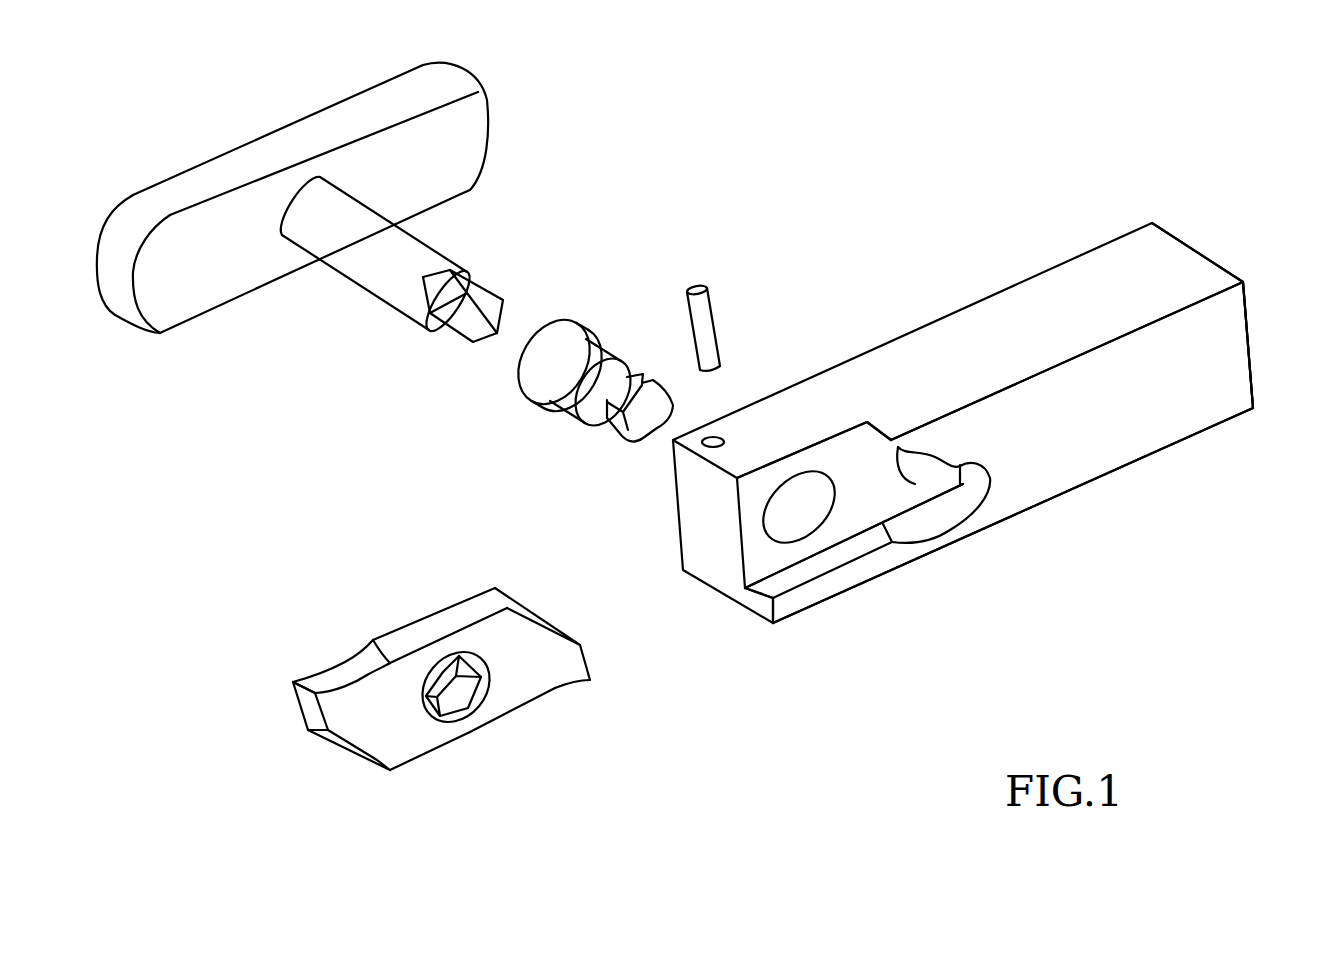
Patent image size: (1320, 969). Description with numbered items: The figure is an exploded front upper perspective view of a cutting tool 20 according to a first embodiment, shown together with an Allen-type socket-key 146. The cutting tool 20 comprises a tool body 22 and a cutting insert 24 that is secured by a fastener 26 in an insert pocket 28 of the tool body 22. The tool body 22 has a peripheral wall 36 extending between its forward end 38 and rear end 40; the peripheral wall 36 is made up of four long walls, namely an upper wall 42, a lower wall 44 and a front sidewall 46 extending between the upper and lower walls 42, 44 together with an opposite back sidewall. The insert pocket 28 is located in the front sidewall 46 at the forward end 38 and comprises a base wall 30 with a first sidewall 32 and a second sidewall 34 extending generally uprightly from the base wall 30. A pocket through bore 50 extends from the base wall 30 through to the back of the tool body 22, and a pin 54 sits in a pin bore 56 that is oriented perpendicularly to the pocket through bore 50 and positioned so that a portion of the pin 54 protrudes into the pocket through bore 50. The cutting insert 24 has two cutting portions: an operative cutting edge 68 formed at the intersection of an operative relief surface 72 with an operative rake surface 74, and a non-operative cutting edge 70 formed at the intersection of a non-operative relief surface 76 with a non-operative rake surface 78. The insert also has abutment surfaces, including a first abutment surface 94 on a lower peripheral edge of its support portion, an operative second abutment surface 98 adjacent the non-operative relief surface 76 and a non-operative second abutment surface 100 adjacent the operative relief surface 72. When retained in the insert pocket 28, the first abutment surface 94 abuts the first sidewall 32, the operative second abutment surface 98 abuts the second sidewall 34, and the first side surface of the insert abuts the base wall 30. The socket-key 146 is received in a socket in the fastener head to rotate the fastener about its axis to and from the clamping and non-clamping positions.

The cutting tool 20 is at (832, 180).
The tool body 22 is at (879, 328).
The cutting insert 24 is at (508, 758).
The fastener 26 is at (596, 305).
The insert pocket 28 is at (783, 558).
The base wall 30 is at (887, 497).
The first sidewall 32 is at (803, 568).
The second sidewall 34 is at (915, 484).
The peripheral wall 36 is at (1025, 318).
The forward end 38 is at (690, 483).
The rear end 40 is at (1252, 343).
The upper wall 42 is at (1165, 260).
The lower wall 44 is at (1192, 437).
The front sidewall 46 is at (1127, 423).
The pocket through bore 50 is at (823, 500).
The pin 54 is at (703, 318).
The pin bore 56 is at (713, 438).
The operative cutting edge 68 is at (295, 692).
The non-operative cutting edge 70 is at (590, 680).
The operative relief surface 72 is at (311, 709).
The operative rake surface 74 is at (345, 670).
The non-operative relief surface 76 is at (589, 662).
The non-operative rake surface 78 is at (552, 685).
The first abutment surface 94 is at (437, 752).
The operative second abutment surface 98 is at (537, 613).
The non-operative second abutment surface 100 is at (344, 752).
The socket-key 146 is at (215, 143).